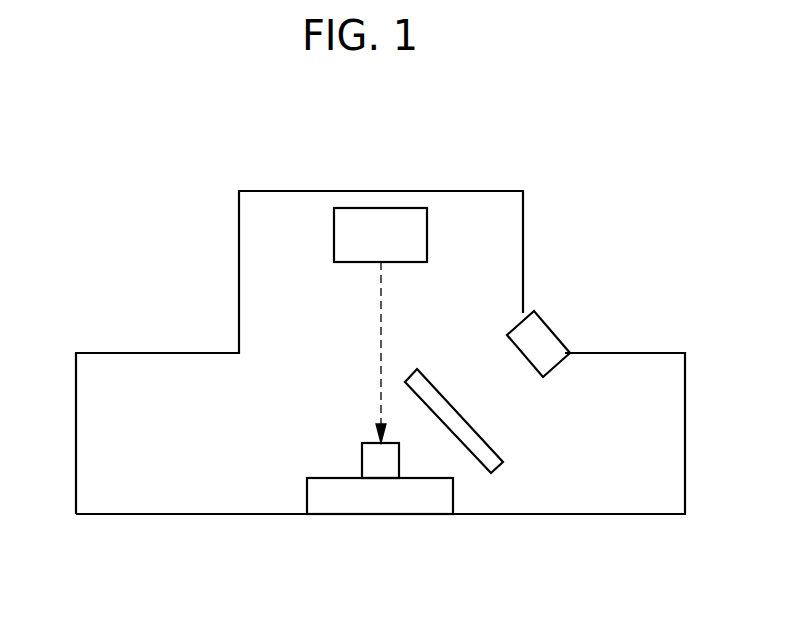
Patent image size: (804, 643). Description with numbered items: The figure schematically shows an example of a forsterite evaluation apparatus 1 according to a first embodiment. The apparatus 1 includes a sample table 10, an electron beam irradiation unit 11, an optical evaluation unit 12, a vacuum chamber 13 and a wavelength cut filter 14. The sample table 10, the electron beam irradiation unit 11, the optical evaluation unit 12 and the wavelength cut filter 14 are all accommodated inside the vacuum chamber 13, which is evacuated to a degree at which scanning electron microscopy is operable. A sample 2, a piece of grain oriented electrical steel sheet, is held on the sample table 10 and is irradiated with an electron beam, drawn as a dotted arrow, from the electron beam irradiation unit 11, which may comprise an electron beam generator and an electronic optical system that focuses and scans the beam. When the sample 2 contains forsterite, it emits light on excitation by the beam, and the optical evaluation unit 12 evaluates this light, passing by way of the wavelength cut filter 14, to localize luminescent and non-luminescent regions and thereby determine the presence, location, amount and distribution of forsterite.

The forsterite evaluation apparatus 1 is at (580, 205).
The sample 2 is at (379, 461).
The sample table 10 is at (363, 496).
The electron beam irradiation unit 11 is at (353, 208).
The optical evaluation unit 12 is at (557, 333).
The vacuum chamber 13 is at (158, 514).
The wavelength cut filter 14 is at (484, 478).